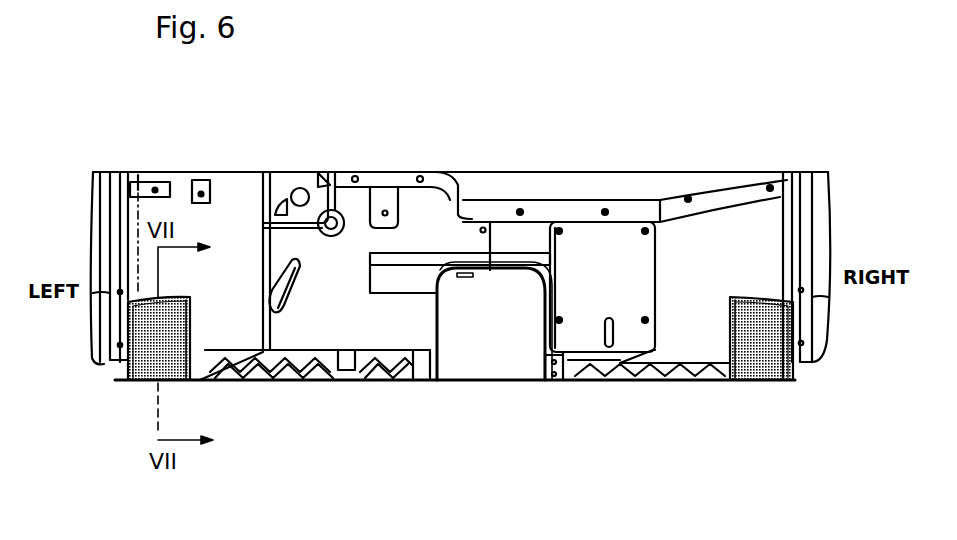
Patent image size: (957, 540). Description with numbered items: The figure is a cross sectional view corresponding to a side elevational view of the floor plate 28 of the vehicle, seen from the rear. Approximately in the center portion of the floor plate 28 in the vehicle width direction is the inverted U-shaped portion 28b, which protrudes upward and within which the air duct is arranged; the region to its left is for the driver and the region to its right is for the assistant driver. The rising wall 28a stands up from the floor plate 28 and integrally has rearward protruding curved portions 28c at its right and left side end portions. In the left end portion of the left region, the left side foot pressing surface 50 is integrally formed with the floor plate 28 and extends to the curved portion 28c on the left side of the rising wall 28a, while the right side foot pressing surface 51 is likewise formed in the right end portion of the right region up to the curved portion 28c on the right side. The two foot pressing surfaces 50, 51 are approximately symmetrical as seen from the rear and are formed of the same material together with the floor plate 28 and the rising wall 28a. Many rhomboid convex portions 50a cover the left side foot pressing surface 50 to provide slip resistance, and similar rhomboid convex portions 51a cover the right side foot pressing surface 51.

The floor plate 28 is at (322, 381).
The rising wall 28a is at (343, 288).
The inverted U-shaped portion 28b is at (533, 316).
The curved portion 28c is at (228, 227).
The left side foot pressing surface 50 is at (128, 381).
The rhomboid convex portions 50a is at (177, 382).
The right side foot pressing surface 51 is at (773, 384).
The rhomboid convex portions 51a is at (751, 381).